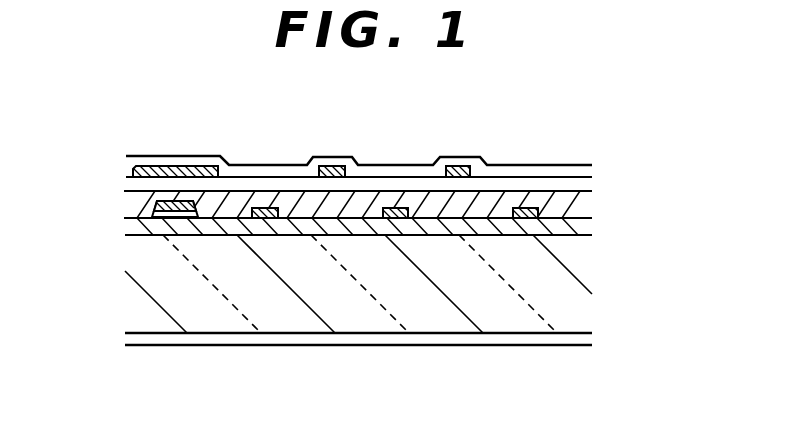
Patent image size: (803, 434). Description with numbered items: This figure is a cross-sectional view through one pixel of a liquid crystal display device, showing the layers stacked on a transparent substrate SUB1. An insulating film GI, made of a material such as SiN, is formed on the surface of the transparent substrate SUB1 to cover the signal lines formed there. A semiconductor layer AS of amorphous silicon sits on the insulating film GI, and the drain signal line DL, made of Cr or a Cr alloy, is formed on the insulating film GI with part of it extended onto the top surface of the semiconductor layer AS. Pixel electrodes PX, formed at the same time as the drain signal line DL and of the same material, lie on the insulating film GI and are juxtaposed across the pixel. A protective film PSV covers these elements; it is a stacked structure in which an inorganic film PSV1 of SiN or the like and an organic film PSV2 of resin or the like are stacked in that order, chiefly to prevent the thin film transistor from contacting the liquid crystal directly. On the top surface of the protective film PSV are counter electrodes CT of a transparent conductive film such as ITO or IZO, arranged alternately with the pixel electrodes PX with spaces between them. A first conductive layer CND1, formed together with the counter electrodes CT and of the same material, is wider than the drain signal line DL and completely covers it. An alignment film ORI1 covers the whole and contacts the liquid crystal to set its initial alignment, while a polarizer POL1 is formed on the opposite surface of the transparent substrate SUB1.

The alignment film ORI1 is at (145, 154).
The first conductive layer CND1 is at (188, 165).
The counter electrode CT is at (332, 166).
The pixel electrode PX is at (265, 208).
The protective film PSV is at (448, 197).
The inorganic film PSV1 is at (588, 207).
The organic film PSV2 is at (588, 187).
The insulating film GI is at (588, 233).
The drain signal line DL is at (153, 208).
The semiconductor layer AS is at (148, 217).
The transparent substrate SUB1 is at (570, 302).
The polarizer POL1 is at (172, 340).